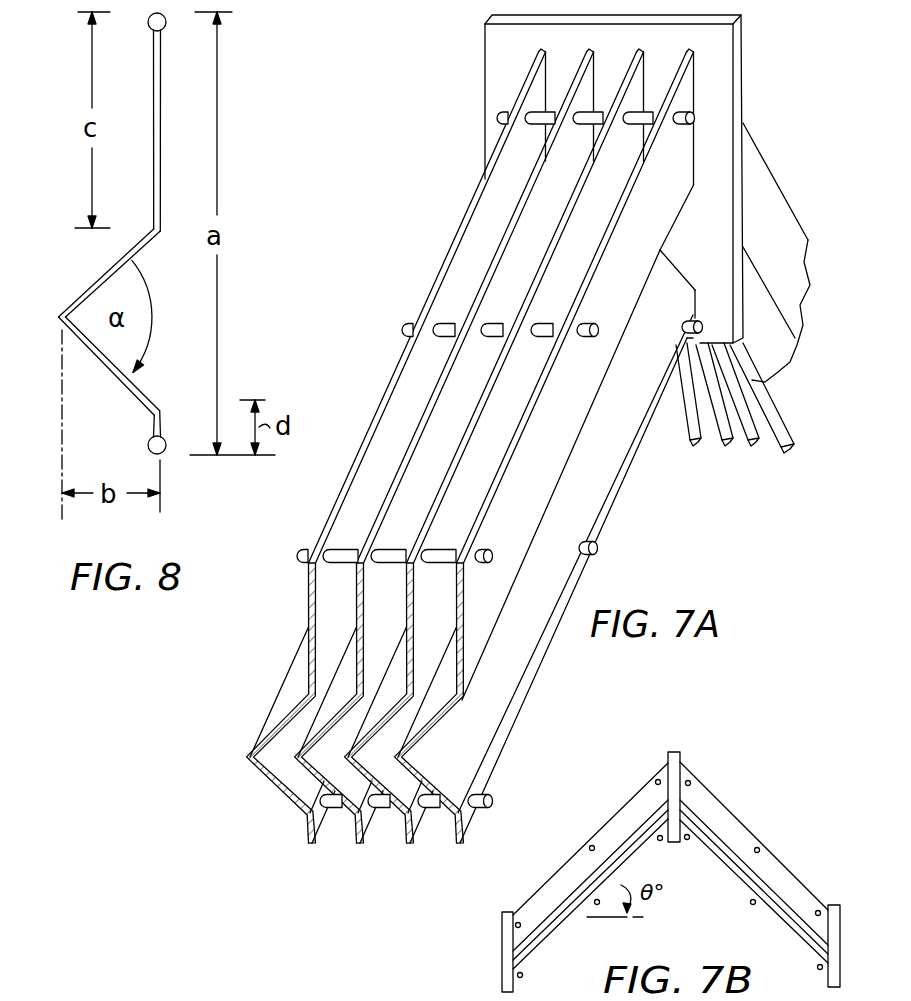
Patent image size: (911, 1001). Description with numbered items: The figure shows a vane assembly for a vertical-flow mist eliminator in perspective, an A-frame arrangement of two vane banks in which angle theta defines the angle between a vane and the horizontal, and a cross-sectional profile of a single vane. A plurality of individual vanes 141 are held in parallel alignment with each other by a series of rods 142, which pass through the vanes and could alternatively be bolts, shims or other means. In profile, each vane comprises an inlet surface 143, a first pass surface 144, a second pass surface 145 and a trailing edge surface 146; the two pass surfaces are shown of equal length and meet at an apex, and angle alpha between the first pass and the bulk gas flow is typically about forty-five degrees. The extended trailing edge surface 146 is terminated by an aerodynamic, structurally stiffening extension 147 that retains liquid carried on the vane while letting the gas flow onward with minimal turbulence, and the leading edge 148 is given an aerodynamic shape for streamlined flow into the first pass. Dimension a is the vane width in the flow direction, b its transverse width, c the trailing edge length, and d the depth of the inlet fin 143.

In FIG. 7A, the vane 141 is at (665, 161).
In FIG. 7A, the rod 142 is at (645, 120).
In FIG. 8, the inlet surface 143 is at (167, 418).
In FIG. 8, the first pass surface 144 is at (108, 365).
In FIG. 8, the second pass surface 145 is at (100, 277).
In FIG. 8, the trailing edge surface 146 is at (152, 133).
In FIG. 8, the extension 147 is at (150, 26).
In FIG. 8, the leading edge 148 is at (162, 452).